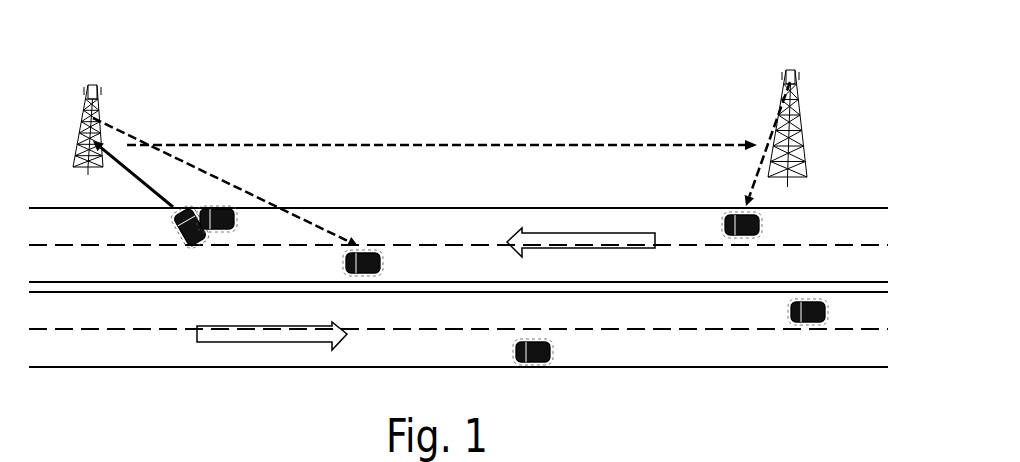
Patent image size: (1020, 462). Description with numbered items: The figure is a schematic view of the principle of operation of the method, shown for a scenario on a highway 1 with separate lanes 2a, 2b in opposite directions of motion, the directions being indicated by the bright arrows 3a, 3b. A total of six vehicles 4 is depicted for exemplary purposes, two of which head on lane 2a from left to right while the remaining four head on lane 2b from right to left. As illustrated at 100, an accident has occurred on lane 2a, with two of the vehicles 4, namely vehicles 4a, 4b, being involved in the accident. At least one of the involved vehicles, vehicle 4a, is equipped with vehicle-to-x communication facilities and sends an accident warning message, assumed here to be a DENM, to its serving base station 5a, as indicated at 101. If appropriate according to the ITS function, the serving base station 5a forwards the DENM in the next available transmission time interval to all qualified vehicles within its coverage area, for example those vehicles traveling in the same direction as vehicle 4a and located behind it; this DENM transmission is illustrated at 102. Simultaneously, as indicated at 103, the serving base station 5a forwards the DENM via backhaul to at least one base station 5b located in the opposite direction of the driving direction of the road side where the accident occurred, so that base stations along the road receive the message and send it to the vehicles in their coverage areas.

The highway 1 is at (458, 297).
The lane 2a is at (824, 201).
The lane 2b is at (789, 374).
The bright arrow 3a is at (547, 237).
The bright arrow 3b is at (267, 343).
The vehicle 4 is at (540, 360).
The vehicle 4a is at (172, 216).
The vehicle 4b is at (237, 218).
The serving base station 5a is at (93, 88).
The base station 5b is at (780, 82).
The accident 100 is at (192, 245).
The accident warning message transmission 101 is at (130, 178).
The DENM transmission 102 is at (242, 189).
The backhaul forwarding 103 is at (368, 145).